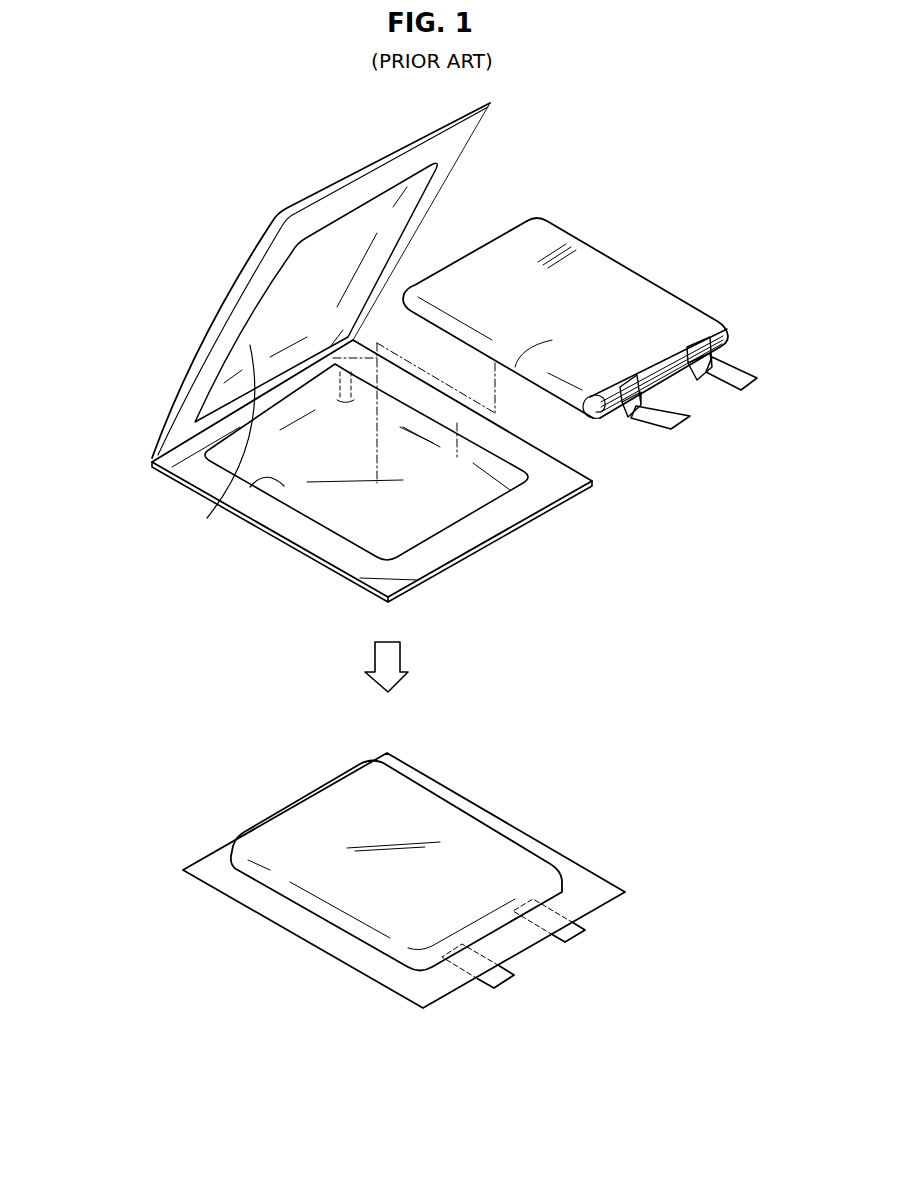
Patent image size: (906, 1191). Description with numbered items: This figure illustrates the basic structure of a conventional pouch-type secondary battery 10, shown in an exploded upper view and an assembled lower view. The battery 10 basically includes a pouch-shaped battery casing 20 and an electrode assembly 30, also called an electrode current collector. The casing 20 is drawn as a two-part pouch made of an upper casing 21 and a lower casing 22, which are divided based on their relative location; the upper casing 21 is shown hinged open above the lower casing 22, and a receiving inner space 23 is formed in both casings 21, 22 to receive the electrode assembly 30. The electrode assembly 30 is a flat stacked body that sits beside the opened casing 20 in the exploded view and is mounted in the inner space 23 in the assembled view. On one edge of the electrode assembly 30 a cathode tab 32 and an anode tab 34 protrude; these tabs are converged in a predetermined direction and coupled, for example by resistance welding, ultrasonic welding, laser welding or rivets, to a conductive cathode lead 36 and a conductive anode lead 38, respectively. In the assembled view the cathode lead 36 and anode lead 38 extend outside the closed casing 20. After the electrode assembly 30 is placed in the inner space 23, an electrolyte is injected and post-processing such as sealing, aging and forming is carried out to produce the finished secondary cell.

The pouch-type secondary battery 10 is at (613, 126).
The pouch-shaped battery casing 20 is at (100, 408).
The upper casing 21 is at (178, 425).
The lower casing 22 is at (178, 478).
The inner space 23 is at (248, 477).
The electrode assembly 30 is at (619, 254).
The cathode tab 32 is at (643, 393).
The anode tab 34 is at (712, 346).
The cathode lead 36 is at (690, 423).
The anode lead 38 is at (760, 381).